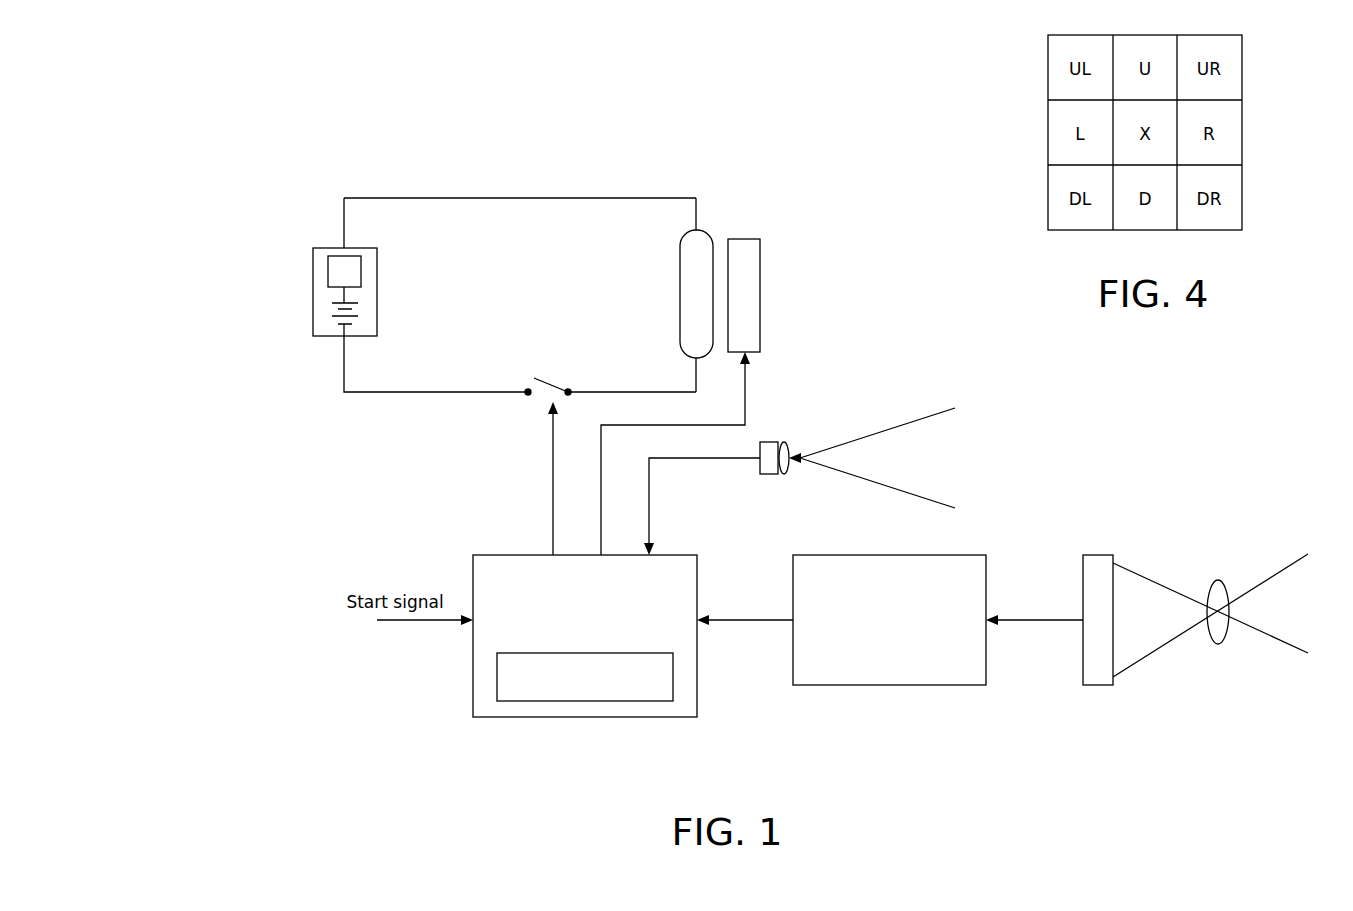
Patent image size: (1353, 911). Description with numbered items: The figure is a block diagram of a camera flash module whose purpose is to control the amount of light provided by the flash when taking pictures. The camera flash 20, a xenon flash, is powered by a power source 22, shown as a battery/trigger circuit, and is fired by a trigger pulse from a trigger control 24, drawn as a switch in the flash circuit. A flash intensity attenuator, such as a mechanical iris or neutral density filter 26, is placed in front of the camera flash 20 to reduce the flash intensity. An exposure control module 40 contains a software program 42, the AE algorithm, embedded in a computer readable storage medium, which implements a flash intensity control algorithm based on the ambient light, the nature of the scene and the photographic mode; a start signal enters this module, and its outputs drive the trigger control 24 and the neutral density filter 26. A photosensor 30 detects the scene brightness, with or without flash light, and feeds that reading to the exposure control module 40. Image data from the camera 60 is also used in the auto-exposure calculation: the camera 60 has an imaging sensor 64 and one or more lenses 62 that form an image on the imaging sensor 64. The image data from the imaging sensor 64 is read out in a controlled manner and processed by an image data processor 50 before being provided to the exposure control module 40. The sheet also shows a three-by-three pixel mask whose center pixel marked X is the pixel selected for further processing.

The camera flash 20 is at (679, 297).
The power source 22 is at (377, 271).
The trigger control 24 is at (545, 372).
The neutral density filter 26 is at (760, 270).
The photosensor 30 is at (840, 466).
The exposure control module 40 is at (532, 558).
The software program 42 is at (497, 677).
The image data processor 50 is at (880, 685).
The camera 60 is at (1165, 608).
The lens 62 is at (1220, 643).
The imaging sensor 64 is at (1097, 556).